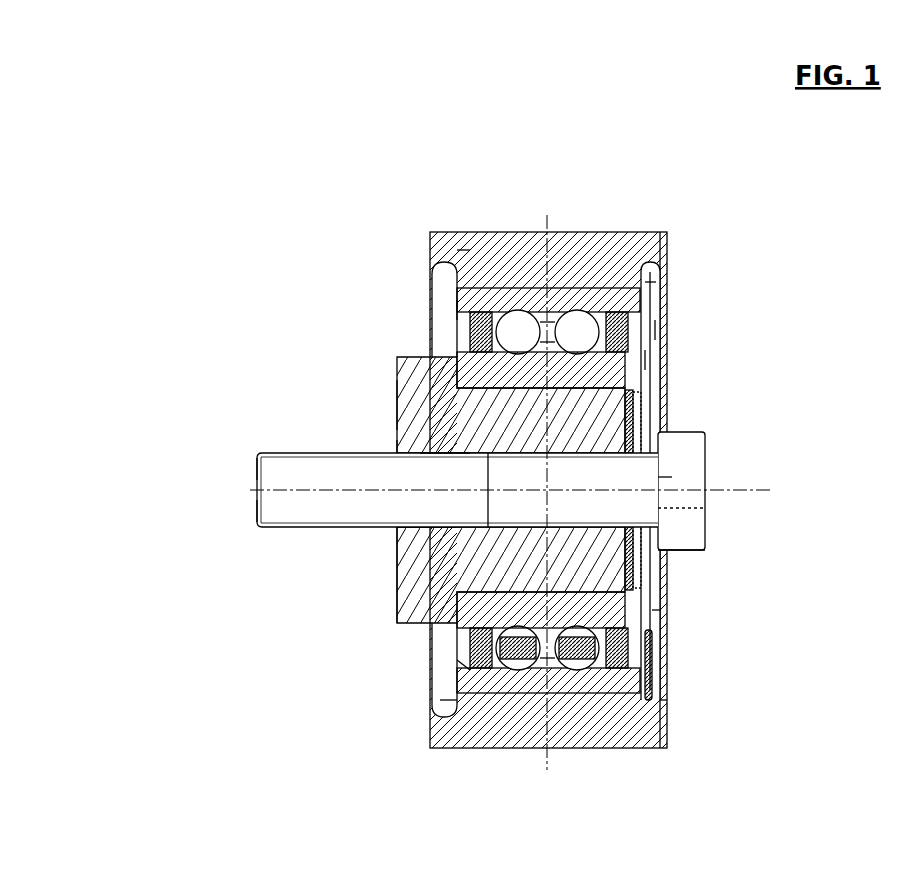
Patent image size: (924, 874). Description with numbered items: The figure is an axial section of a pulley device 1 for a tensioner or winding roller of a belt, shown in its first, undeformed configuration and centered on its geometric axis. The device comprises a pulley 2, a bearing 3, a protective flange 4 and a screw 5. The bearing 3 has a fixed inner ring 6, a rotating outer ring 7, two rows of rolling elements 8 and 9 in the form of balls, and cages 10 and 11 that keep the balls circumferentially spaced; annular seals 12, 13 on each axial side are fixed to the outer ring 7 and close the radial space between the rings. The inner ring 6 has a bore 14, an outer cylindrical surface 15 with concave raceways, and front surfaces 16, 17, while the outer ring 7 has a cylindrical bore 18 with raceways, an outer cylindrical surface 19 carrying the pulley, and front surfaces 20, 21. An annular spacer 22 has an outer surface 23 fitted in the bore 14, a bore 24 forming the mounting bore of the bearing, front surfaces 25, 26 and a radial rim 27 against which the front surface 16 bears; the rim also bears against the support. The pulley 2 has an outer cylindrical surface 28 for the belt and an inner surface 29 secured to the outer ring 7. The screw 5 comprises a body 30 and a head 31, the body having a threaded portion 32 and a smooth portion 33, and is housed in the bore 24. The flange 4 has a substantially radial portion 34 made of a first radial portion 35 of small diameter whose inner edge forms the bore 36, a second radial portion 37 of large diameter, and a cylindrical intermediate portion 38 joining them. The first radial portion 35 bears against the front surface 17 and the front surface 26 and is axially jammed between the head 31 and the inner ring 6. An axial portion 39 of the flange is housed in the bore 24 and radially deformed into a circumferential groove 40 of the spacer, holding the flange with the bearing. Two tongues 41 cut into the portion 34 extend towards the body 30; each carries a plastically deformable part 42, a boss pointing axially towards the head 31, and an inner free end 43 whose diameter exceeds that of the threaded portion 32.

The pulley device 1 is at (245, 303).
The pulley 2 is at (453, 232).
The bearing 3 is at (436, 310).
The protective flange 4 is at (655, 688).
The screw 5 is at (245, 490).
The inner ring 6 is at (470, 380).
The outer ring 7 is at (512, 730).
The rolling elements 8 is at (518, 332).
The rolling elements 9 is at (577, 332).
The cage 10 is at (495, 705).
The cage 11 is at (583, 740).
The annular seal 12 is at (446, 700).
The annular seal 13 is at (638, 720).
The bore 14 is at (450, 405).
The outer cylindrical surface 15 is at (465, 670).
The front surface 16 is at (468, 640).
The front surface 17 is at (652, 610).
The cylindrical bore 18 is at (470, 330).
The outer cylindrical surface 19 is at (470, 248).
The front surface 20 is at (436, 292).
The front surface 21 is at (668, 262).
The spacer 22 is at (390, 573).
The outer surface 23 is at (462, 606).
The bore 24 is at (430, 472).
The front surface 25 is at (435, 548).
The front surface 26 is at (640, 590).
The radial rim 27 is at (425, 448).
The outer cylindrical surface 28 is at (548, 745).
The inner surface 29 is at (615, 312).
The body 30 is at (262, 462).
The head 31 is at (662, 553).
The threaded portion 32 is at (262, 518).
The smooth portion 33 is at (545, 300).
The substantially radial portion 34 is at (774, 250).
The first radial portion 35 is at (645, 360).
The bore 36 is at (640, 448).
The second radial portion 37 is at (653, 282).
The cylindrical intermediate portion 38 is at (655, 330).
The axial portion 39 is at (660, 477).
The circumferential groove 40 is at (660, 508).
The tongues 41 is at (640, 560).
The plastically deformable part 42 is at (667, 432).
The inner free end 43 is at (650, 512).